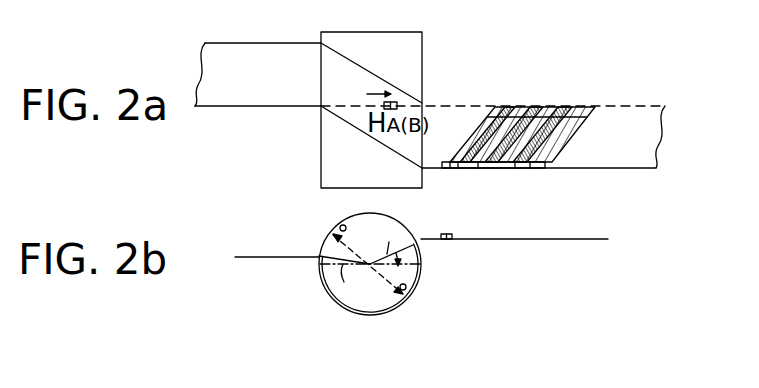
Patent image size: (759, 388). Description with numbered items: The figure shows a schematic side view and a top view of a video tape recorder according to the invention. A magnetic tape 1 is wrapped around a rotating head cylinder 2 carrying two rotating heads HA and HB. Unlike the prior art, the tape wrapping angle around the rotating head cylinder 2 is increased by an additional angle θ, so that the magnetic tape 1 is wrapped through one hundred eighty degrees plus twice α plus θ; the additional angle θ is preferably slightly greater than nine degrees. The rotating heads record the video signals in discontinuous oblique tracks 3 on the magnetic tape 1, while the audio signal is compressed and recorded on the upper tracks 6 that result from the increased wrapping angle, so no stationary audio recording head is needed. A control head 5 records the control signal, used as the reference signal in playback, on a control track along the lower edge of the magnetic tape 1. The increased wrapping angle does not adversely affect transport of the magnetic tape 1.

In FIG. 2a, the magnetic tape 1 is at (647, 135).
In FIG. 2b, the magnetic tape 1 is at (553, 239).
In FIG. 2a, the rotating head cylinder 2 is at (422, 43).
In FIG. 2b, the rotating head cylinder 2 is at (355, 300).
In FIG. 2a, the oblique tracks 3 is at (595, 119).
In FIG. 2a, the control head 5 is at (445, 169).
In FIG. 2b, the control head 5 is at (452, 233).
In FIG. 2a, the upper tracks 6 is at (597, 108).